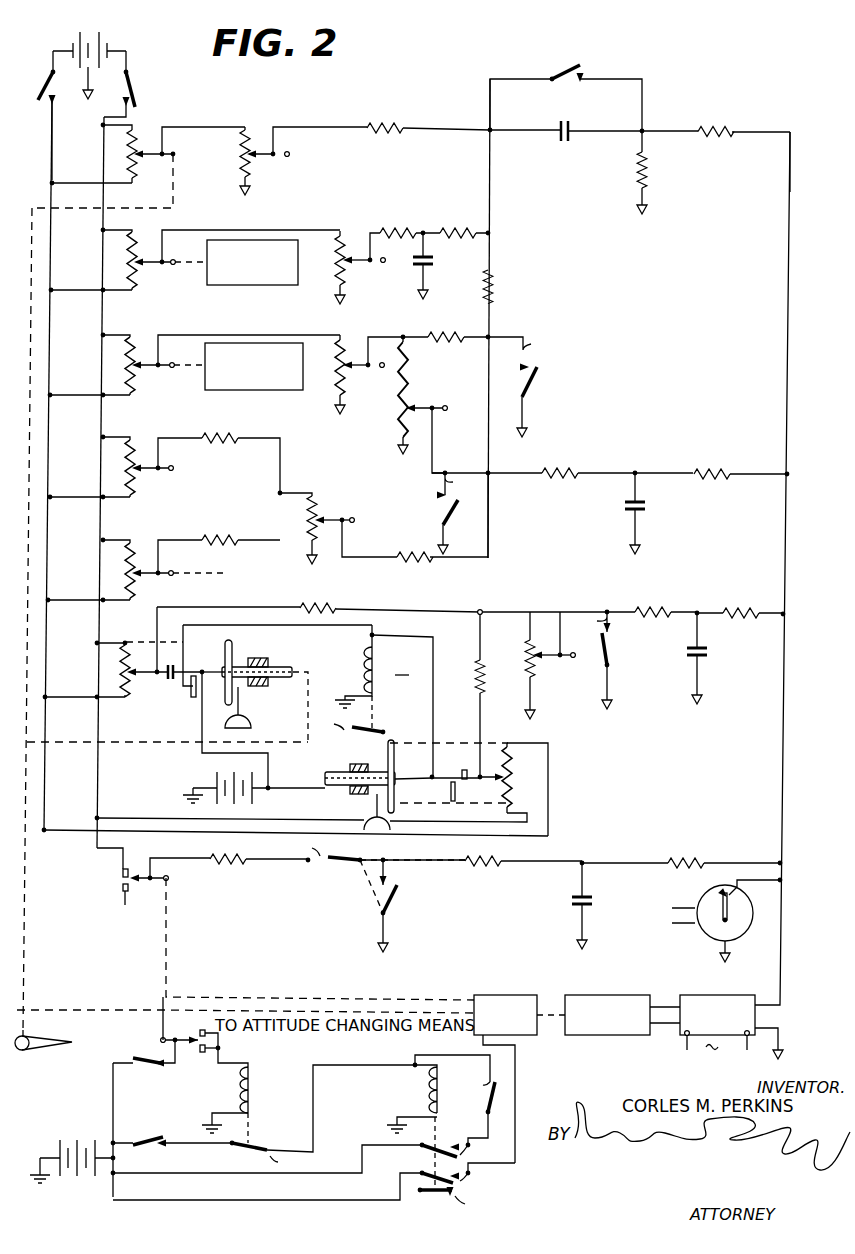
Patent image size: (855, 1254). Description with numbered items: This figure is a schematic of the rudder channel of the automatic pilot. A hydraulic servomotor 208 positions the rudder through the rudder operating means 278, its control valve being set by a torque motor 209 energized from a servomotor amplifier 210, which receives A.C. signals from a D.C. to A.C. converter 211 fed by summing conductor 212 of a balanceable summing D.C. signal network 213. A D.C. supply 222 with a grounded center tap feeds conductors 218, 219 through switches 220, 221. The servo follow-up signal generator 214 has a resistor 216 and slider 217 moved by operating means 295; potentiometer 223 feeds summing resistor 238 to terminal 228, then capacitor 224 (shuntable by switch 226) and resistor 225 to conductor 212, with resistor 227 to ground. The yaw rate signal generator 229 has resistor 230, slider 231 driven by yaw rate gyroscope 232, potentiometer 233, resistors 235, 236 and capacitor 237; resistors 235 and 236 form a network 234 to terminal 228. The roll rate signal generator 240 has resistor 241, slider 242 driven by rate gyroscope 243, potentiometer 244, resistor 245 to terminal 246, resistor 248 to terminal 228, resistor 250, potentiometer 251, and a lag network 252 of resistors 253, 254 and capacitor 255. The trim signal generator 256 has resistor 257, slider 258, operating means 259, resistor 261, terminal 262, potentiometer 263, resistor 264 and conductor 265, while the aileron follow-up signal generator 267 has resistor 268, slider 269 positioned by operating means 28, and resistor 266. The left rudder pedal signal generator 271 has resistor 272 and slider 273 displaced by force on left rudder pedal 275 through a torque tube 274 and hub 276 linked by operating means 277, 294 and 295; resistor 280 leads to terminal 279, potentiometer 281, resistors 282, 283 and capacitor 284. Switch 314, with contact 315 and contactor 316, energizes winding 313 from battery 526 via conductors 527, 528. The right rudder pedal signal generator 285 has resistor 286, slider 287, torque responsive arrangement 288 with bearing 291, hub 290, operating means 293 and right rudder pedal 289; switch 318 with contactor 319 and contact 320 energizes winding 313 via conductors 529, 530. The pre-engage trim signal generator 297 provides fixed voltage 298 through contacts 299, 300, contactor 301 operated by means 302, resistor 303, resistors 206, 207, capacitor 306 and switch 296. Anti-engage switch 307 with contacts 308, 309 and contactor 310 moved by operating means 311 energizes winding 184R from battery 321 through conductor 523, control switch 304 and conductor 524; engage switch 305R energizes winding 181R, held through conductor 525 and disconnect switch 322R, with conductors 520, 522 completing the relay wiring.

The D.C. supply 222 is at (90, 36).
The single pole switch 220 is at (35, 70).
The single pole single throw switch 221 is at (136, 74).
The D.C. supply conductor 218 is at (50, 150).
The servo follow-up signal generator 214 is at (92, 142).
The resistor 216 is at (136, 142).
The D.C. supply conductor 219 is at (102, 169).
The slider 217 is at (162, 127).
The operating means 295 is at (173, 176).
The voltage dividing potentiometer 223 is at (268, 160).
The summing resistor 238 is at (365, 127).
The terminal 228 is at (488, 128).
The single pole single throw switch 226 is at (556, 72).
The capacitor 224 is at (560, 138).
The resistor 225 is at (702, 128).
The resistor 227 is at (640, 174).
The summing conductor 212 is at (790, 190).
The yaw rate signal generator 229 is at (87, 265).
The resistor 230 is at (132, 238).
The slider 231 is at (241, 262).
The yaw rate gyroscope 232 is at (208, 285).
The voltage dividing potentiometer 233 is at (352, 272).
The network 234 is at (430, 213).
The resistor 235 is at (386, 228).
The resistor 236 is at (442, 232).
The capacitor 237 is at (430, 264).
The resistor 248 is at (493, 295).
The balanceable parallel summing D.C. signal network 213 is at (750, 403).
The roll rate signal generator 240 is at (90, 371).
The resistor 241 is at (125, 369).
The slider 242 is at (142, 373).
The rate gyroscope 243 is at (200, 390).
The voltage dividing potentiometer 244 is at (352, 378).
The resistor 245 is at (430, 335).
The terminal 246 is at (506, 337).
The resistor 250 is at (406, 366).
The voltage dividing potentiometer 251 is at (438, 416).
The trim signal generator 256 is at (90, 473).
The resistor 257 is at (136, 448).
The adjustable slider 258 is at (142, 474).
The operating means 259 is at (174, 468).
The resistor 261 is at (206, 438).
The terminal 262 is at (280, 493).
The voltage dividing potentiometer 263 is at (322, 512).
The resistor 264 is at (390, 574).
The conductor 265 is at (488, 558).
The lag network 252 is at (637, 451).
The resistor 253 is at (546, 467).
The resistor 254 is at (700, 467).
The capacitor 255 is at (644, 512).
The aileron follow-up signal generator 267 is at (87, 575).
The resistor 268 is at (138, 548).
The adjustable slider 269 is at (140, 576).
The resistor 266 is at (208, 540).
The operating means 28 is at (199, 573).
The resistor 280 is at (334, 608).
The terminal 279 is at (482, 612).
The voltage dividing potentiometer 281 is at (545, 670).
The resistor 282 is at (656, 609).
The resistor 283 is at (736, 609).
The capacitor 284 is at (690, 660).
The left rudder pedal signal generator 271 is at (84, 669).
The resistor 272 is at (130, 644).
The slider 273 is at (137, 673).
The pedal torque responsive switch 314 is at (165, 721).
The conductor 528 is at (186, 634).
The contact 315 is at (191, 699).
The contactor 316 is at (188, 672).
The gyro rotor 274 is at (244, 652).
The hub 276 is at (274, 666).
The left rudder pedal 275 is at (252, 724).
The operating means 277 is at (308, 710).
The conductor 527 is at (202, 727).
The operating means 294 is at (108, 742).
The operating winding 313 is at (366, 676).
The conductor 530 is at (401, 712).
The battery 526 is at (206, 788).
The operating means 293 is at (316, 787).
The conductor 529 is at (316, 790).
The hub 290 is at (325, 773).
The bearing 291 is at (350, 764).
The torque responsive arrangement 288 is at (382, 764).
The right rudder pedal 289 is at (364, 820).
The switch 318 is at (430, 778).
The contact 320 is at (418, 800).
The contactor 319 is at (452, 776).
The adjustable slider 287 is at (472, 788).
The resistor 286 is at (508, 776).
The right rudder pedal signal generator 285 is at (592, 799).
The pre-engage trim signal generator 297 is at (106, 887).
The contact 299 is at (123, 874).
The contact 300 is at (122, 888).
The source of fixed voltage 298 is at (136, 858).
The contactor 301 is at (144, 906).
The resistor 303 is at (224, 865).
The switch 296 is at (406, 900).
The resistor 206 is at (464, 860).
The resistor 207 is at (670, 862).
The capacitor 306 is at (568, 900).
The D.C. to A.C. converter 211 is at (703, 934).
The operating means 302 is at (166, 938).
The rudder operating means 278 is at (78, 1010).
The operating means 311 is at (162, 1006).
The contactor 310 is at (180, 1036).
The contact 308 is at (208, 1032).
The contact 309 is at (200, 1048).
The anti-engage switch 307 is at (230, 1046).
The control switch 304 is at (144, 1058).
The operating winding 184R is at (220, 1095).
The conductor 524 is at (338, 1094).
The conductor 523 is at (113, 1100).
The battery 321 is at (72, 1176).
The rudder servo engage switch 305R is at (146, 1143).
The operating winding 181R is at (422, 1102).
The disconnect switch 322R is at (441, 1122).
The conductor 525 is at (246, 1173).
The conductor 520 is at (238, 1202).
The conductor 522 is at (524, 1060).
The hydraulic servomotor 208 is at (480, 995).
The torque motor 209 is at (582, 995).
The servomotor amplifier 210 is at (696, 995).